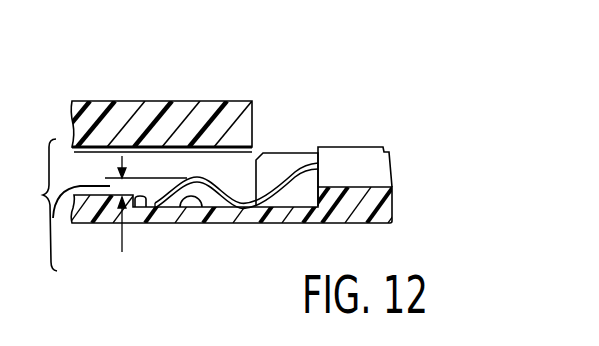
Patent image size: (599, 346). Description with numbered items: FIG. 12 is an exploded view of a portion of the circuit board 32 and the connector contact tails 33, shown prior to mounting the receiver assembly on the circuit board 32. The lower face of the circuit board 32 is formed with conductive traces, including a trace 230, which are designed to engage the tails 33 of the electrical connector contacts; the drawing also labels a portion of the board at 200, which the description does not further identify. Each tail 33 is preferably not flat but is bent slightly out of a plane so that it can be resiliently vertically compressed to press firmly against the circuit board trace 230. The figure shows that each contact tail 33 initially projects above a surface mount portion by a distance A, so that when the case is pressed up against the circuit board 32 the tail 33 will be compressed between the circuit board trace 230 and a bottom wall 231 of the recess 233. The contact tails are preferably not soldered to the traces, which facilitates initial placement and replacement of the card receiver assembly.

The circuit board 32 is at (197, 92).
The substrate block 200 is at (255, 114).
The trace 230 is at (256, 150).
The tail 33 is at (222, 194).
The bottom wall 231 is at (207, 207).
The recess 233 is at (140, 208).
The distance A is at (48, 223).